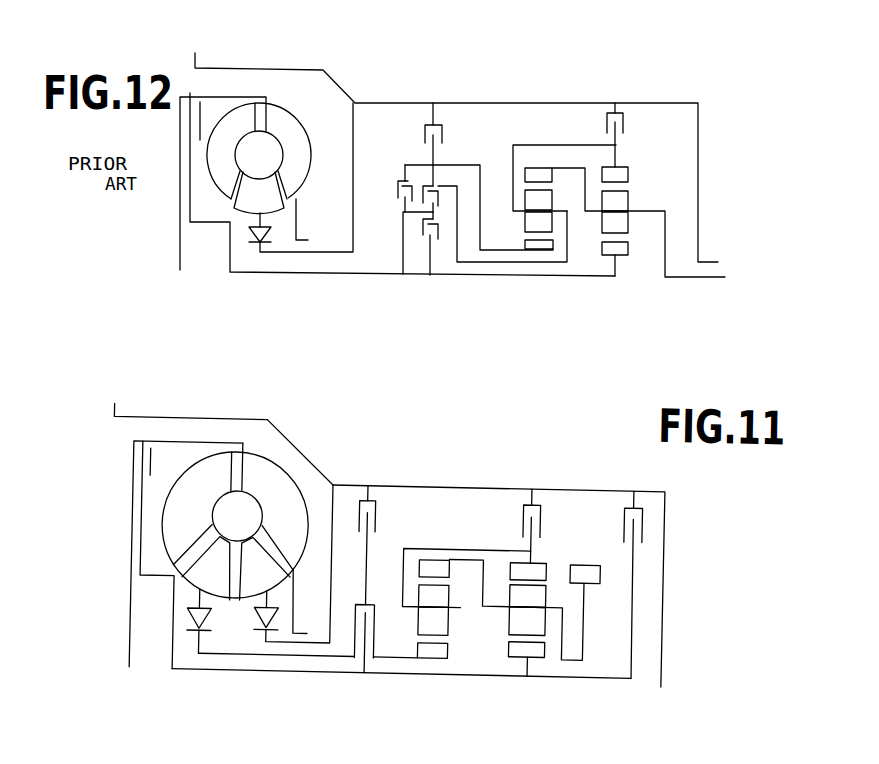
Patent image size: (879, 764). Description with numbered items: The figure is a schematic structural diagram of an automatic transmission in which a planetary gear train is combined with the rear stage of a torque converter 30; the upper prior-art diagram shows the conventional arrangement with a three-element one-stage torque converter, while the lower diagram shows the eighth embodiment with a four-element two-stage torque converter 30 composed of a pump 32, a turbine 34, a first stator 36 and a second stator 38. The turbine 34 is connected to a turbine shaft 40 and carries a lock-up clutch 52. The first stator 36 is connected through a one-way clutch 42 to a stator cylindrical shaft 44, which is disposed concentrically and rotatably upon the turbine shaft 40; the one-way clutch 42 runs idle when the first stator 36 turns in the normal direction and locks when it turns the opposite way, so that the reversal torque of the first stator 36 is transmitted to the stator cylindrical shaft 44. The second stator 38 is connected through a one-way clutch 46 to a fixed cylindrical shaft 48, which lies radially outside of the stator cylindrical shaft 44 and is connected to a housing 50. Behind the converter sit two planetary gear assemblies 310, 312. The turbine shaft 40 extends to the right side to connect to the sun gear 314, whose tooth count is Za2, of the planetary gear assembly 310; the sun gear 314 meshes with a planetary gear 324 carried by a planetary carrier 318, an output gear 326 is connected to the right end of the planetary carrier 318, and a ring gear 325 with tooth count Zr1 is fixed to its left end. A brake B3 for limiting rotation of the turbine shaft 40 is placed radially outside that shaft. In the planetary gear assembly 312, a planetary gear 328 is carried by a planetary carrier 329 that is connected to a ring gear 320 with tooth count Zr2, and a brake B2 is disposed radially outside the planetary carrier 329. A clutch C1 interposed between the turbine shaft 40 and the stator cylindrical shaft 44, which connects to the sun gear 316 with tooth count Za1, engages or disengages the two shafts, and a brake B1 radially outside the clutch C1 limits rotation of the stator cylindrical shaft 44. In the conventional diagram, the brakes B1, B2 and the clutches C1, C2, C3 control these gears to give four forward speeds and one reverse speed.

In FIG. 11, the torque converter 30 is at (224, 398).
In FIG. 11, the pump 32 is at (273, 482).
In FIG. 11, the turbine 34 is at (183, 528).
In FIG. 11, the first stator 36 is at (199, 583).
In FIG. 11, the second stator 38 is at (250, 591).
In FIG. 11, the turbine shaft 40 is at (190, 673).
In FIG. 11, the one-way clutch 42 is at (203, 616).
In FIG. 11, the stator cylindrical shaft 44 is at (306, 660).
In FIG. 11, the one-way clutch 46 is at (280, 653).
In FIG. 11, the fixed cylindrical shaft 48 is at (326, 676).
In FIG. 11, the housing 50 is at (313, 466).
In FIG. 11, the lock-up clutch 52 is at (142, 490).
In FIG. 12, the planetary gear assembly 310 is at (688, 147).
In FIG. 11, the planetary gear assembly 310 is at (606, 573).
In FIG. 12, the planetary gear assembly 312 is at (545, 174).
In FIG. 11, the planetary gear assembly 312 is at (433, 567).
In FIG. 12, the sun gear 314 is at (628, 248).
In FIG. 11, the sun gear 314 is at (532, 699).
In FIG. 12, the sun gear 316 is at (558, 250).
In FIG. 11, the sun gear 316 is at (448, 695).
In FIG. 12, the planetary carrier 318 is at (648, 211).
In FIG. 11, the planetary carrier 318 is at (558, 607).
In FIG. 12, the ring gear 320 is at (563, 173).
In FIG. 11, the ring gear 320 is at (564, 486).
In FIG. 11, the planetary gear 324 is at (546, 623).
In FIG. 11, the ring gear 325 is at (446, 502).
In FIG. 11, the output gear 326 is at (597, 560).
In FIG. 11, the planetary gear 328 is at (421, 624).
In FIG. 11, the planetary carrier 329 is at (405, 587).
In FIG. 12, the brake B1 is at (434, 122).
In FIG. 11, the brake B1 is at (367, 531).
In FIG. 12, the brake B2 is at (618, 123).
In FIG. 11, the brake B2 is at (532, 514).
In FIG. 11, the brake B3 is at (633, 573).
In FIG. 12, the clutch C1 is at (464, 216).
In FIG. 11, the clutch C1 is at (377, 626).
In FIG. 12, the clutch C2 is at (495, 213).
In FIG. 12, the clutch C3 is at (438, 243).
In FIG. 11, the number of teeth of ring gear Zr1 is at (436, 553).
In FIG. 11, the number of teeth of ring gear Zr2 is at (541, 561).
In FIG. 11, the number of teeth of sun gear Za1 is at (454, 659).
In FIG. 11, the number of teeth of sun gear Za2 is at (542, 661).